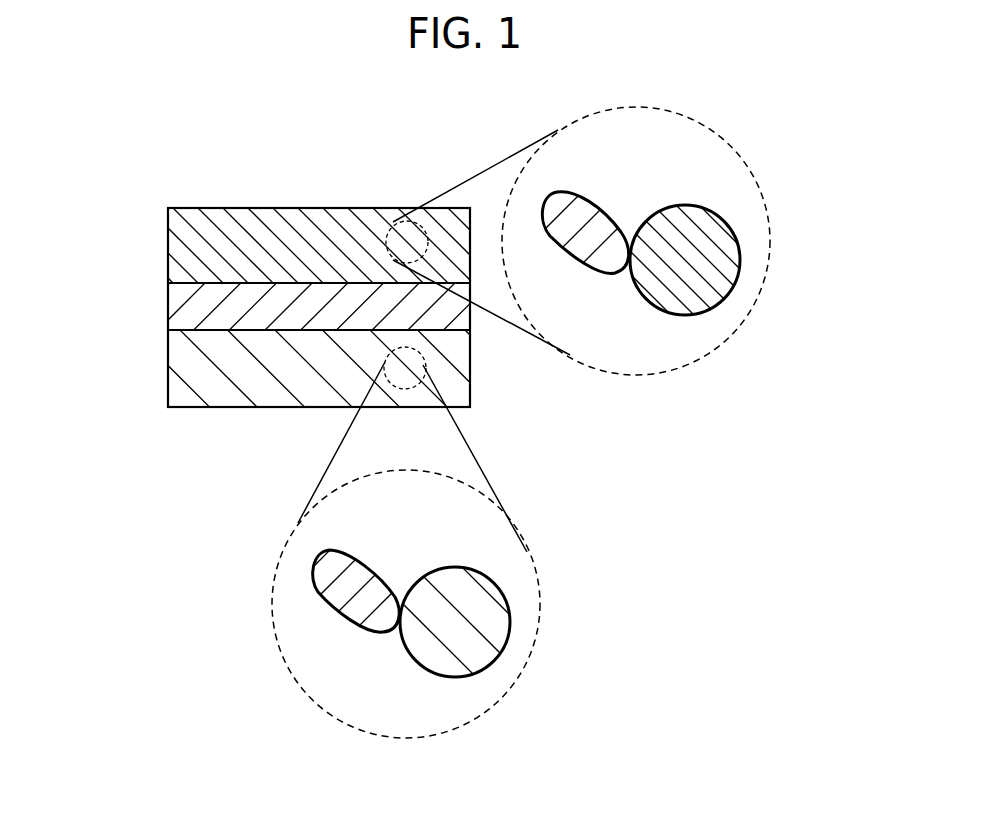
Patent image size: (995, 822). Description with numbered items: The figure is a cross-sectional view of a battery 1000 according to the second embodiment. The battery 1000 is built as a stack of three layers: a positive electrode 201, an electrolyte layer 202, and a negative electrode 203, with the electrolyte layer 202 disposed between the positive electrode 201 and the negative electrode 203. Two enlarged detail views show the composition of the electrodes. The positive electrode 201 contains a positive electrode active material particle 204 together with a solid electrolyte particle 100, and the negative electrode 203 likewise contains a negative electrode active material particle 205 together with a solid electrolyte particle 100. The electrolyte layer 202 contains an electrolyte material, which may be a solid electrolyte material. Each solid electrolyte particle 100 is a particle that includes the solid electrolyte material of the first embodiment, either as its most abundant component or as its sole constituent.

The battery 1000 is at (337, 152).
The positive electrode 201 is at (188, 228).
The electrolyte layer 202 is at (187, 303).
The negative electrode 203 is at (188, 372).
The solid electrolyte particle 100 is at (600, 253).
The positive electrode active material particle 204 is at (708, 255).
The negative electrode active material particle 205 is at (480, 608).